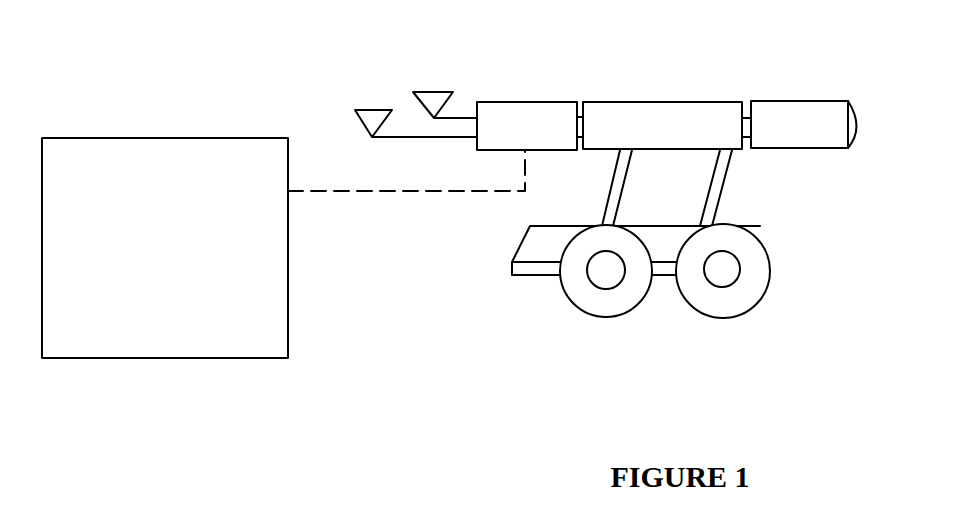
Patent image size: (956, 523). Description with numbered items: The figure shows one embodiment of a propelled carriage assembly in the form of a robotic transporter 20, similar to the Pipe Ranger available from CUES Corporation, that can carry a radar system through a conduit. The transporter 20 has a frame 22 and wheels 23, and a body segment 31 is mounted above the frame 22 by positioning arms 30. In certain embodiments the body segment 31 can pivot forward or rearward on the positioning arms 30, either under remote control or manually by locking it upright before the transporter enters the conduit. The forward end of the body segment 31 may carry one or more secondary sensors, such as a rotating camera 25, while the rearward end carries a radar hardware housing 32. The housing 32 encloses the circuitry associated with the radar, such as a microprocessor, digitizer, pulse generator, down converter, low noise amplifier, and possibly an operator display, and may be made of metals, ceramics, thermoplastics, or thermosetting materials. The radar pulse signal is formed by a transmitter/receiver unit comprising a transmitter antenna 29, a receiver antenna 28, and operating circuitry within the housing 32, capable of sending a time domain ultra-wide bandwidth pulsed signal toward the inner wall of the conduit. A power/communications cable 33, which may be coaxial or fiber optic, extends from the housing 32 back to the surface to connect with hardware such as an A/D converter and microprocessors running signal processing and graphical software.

The robotic transporter 20 is at (603, 302).
The frame 22 is at (507, 273).
The wheels 23 is at (601, 319).
The rotating camera 25 is at (795, 99).
The receiver antenna 28 is at (350, 118).
The transmitter antenna 29 is at (428, 90).
The positioning arms 30 is at (729, 173).
The body segment 31 is at (653, 100).
The radar hardware housing 32 is at (525, 100).
The power/communications cable 33 is at (366, 195).